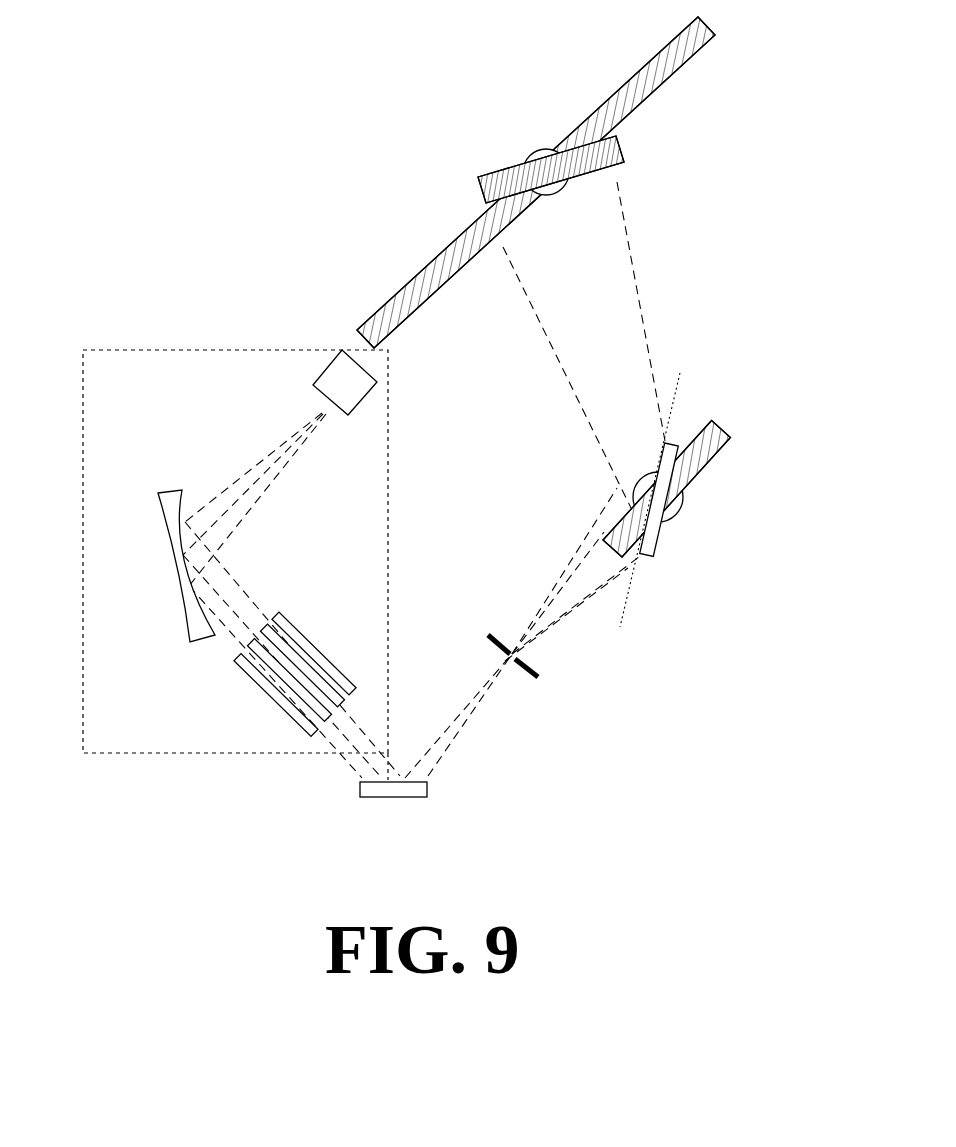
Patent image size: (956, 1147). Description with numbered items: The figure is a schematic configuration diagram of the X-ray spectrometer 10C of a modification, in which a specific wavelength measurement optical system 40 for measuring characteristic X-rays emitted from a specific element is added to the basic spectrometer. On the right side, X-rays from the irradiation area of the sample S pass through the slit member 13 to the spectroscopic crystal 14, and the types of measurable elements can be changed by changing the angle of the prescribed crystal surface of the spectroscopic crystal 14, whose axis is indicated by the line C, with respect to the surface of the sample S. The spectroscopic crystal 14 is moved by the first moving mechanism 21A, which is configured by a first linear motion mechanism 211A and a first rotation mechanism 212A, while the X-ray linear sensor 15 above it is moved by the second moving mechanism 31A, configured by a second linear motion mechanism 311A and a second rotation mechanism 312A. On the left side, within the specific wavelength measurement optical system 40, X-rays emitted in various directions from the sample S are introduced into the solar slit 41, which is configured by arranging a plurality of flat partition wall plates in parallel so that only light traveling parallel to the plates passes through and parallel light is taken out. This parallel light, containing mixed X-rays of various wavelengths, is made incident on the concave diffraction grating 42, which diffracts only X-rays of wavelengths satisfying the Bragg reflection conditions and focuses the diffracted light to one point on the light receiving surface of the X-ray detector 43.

The X-ray spectrometer 10C is at (196, 150).
The X-ray linear sensor 15 is at (623, 163).
The second moving mechanism 31A is at (498, 140).
The second linear motion mechanism 311A is at (573, 132).
The second rotation mechanism 312A is at (530, 148).
The first moving mechanism 21A is at (727, 489).
The first linear motion mechanism 211A is at (697, 480).
The first rotation mechanism 212A is at (682, 507).
The spectroscopic crystal 14 is at (669, 451).
The optical axis C is at (646, 514).
The slit member 13 is at (537, 677).
The sample S is at (412, 797).
The specific wavelength measurement optical system 40 is at (82, 463).
The solar slit 41 is at (260, 688).
The concave diffraction grating 42 is at (183, 610).
The X-ray detector 43 is at (310, 383).